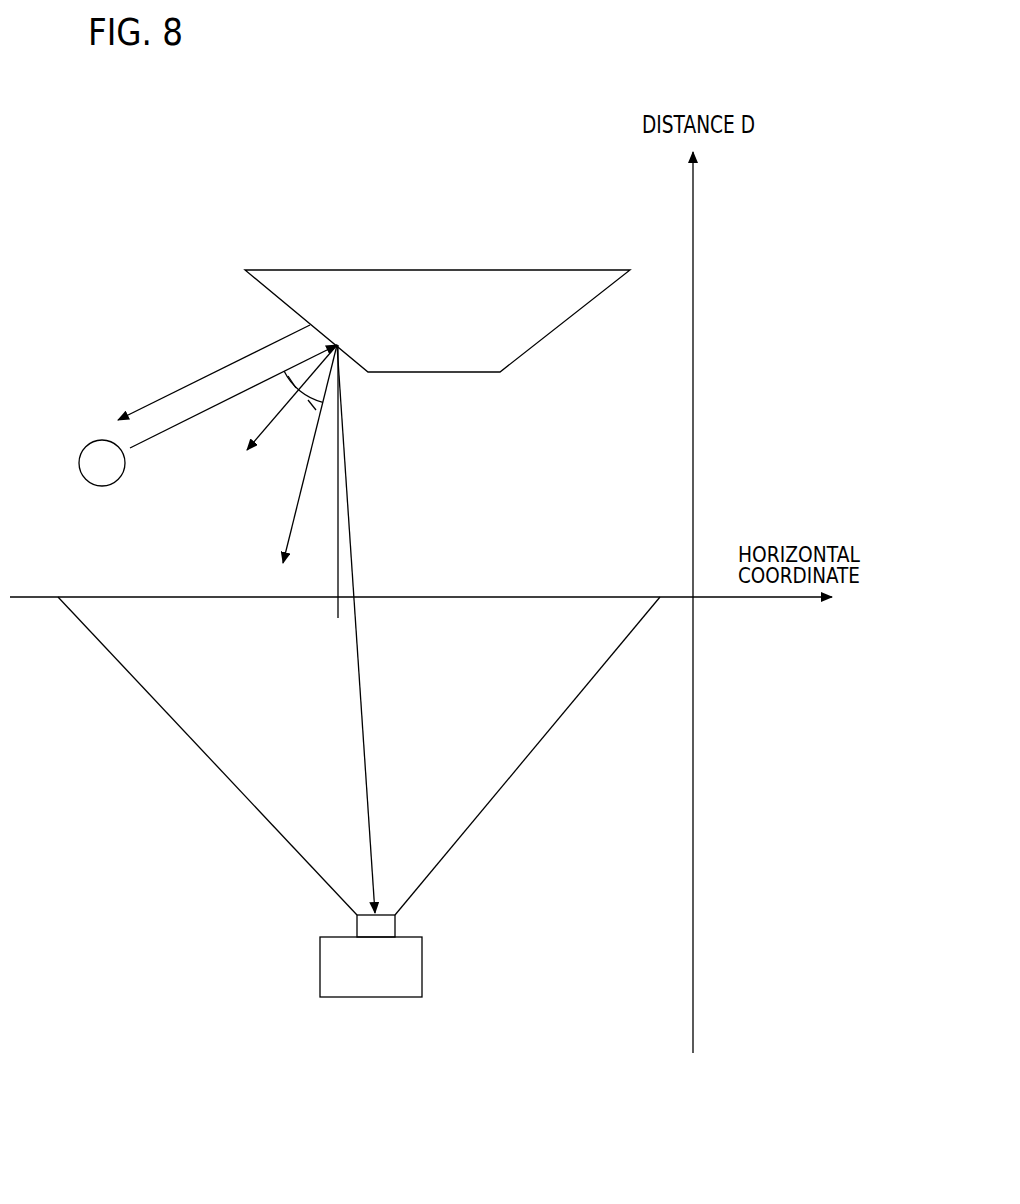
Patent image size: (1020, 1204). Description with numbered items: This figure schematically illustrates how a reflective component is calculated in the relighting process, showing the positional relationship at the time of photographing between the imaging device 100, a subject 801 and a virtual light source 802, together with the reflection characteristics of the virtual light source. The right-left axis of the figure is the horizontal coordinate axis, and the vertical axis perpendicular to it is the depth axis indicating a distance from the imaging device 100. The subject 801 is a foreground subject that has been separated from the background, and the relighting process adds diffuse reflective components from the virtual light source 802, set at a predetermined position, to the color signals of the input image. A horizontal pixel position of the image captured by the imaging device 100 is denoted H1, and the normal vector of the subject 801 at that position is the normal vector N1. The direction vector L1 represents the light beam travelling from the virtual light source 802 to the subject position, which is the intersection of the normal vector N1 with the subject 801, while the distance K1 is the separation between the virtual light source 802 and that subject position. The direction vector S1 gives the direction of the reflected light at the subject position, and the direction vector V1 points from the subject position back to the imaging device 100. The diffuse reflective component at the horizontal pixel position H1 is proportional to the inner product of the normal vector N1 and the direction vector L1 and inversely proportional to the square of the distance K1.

The subject 801 is at (538, 270).
The virtual light source 802 is at (85, 446).
The imaging device 100 is at (422, 948).
The distance K1 is at (214, 372).
The direction vector of a light beam L1 is at (233, 406).
The normal vector N1 is at (267, 430).
The direction vector of reflected light S1 is at (297, 467).
The horizontal pixel position H1 is at (339, 495).
The direction vector from the subject position to the imaging device V1 is at (354, 629).